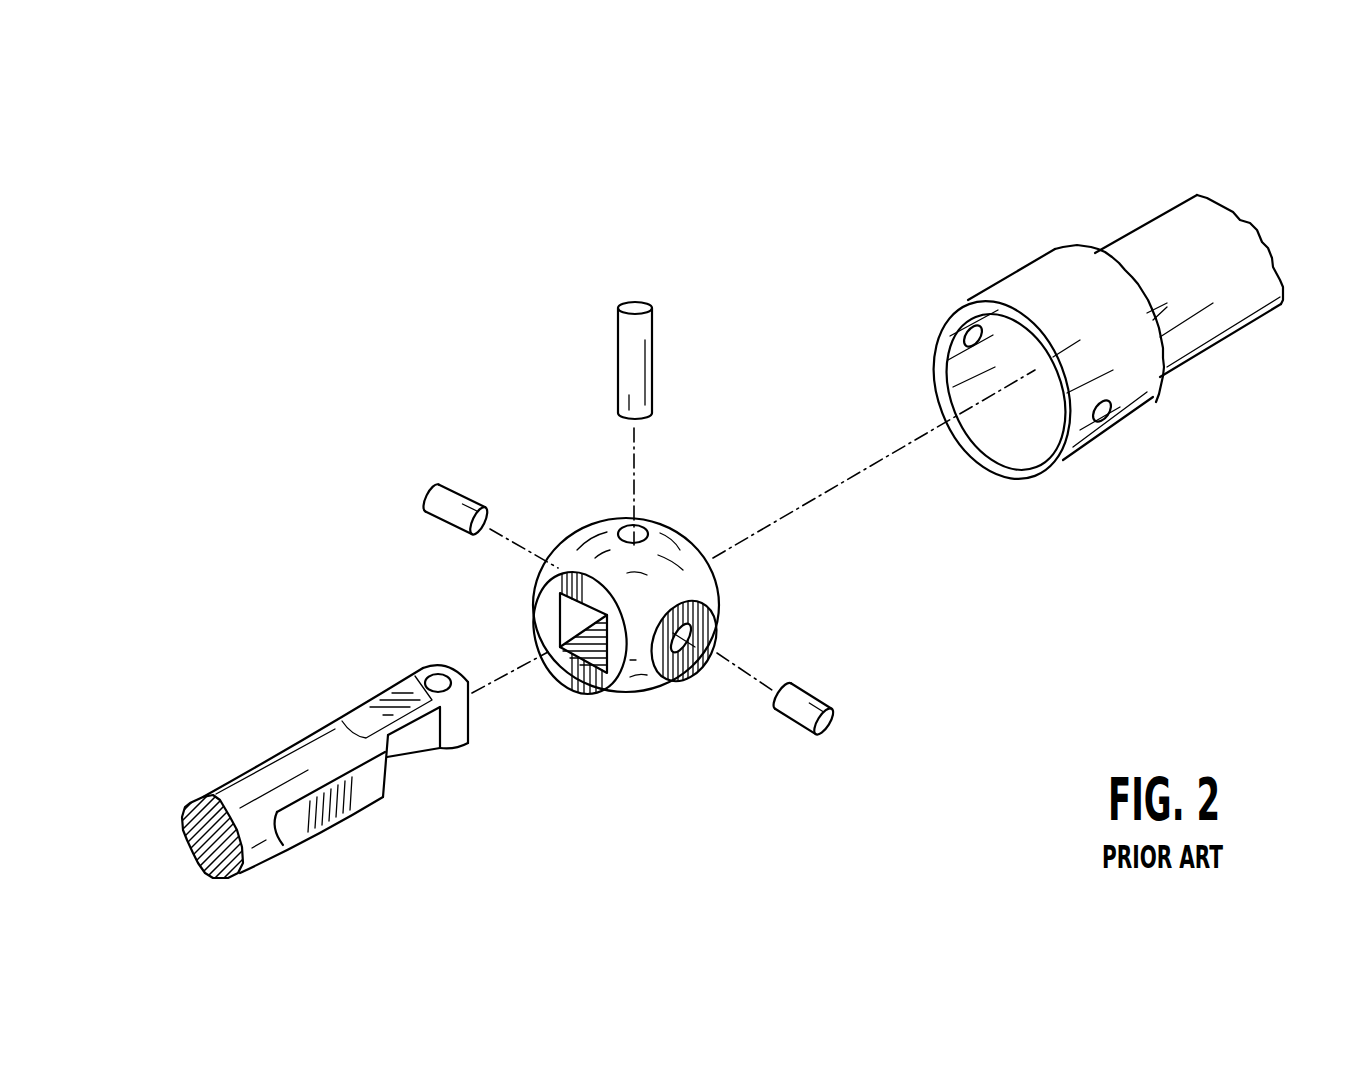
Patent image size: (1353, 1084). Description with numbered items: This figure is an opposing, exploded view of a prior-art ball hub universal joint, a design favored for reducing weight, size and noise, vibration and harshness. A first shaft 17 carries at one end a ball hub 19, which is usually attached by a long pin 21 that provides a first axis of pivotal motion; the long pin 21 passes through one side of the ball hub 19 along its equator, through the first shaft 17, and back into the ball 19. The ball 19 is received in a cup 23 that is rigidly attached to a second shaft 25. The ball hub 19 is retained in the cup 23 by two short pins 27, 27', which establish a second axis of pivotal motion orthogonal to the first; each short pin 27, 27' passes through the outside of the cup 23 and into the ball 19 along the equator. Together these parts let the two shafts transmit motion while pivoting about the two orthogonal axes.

The first shaft 17 is at (245, 773).
The ball hub 19 is at (693, 572).
The long pin 21 is at (623, 347).
The cup 23 is at (1022, 275).
The second shaft 25 is at (1158, 228).
The short pin 27 is at (867, 710).
The short pin 27' is at (388, 509).